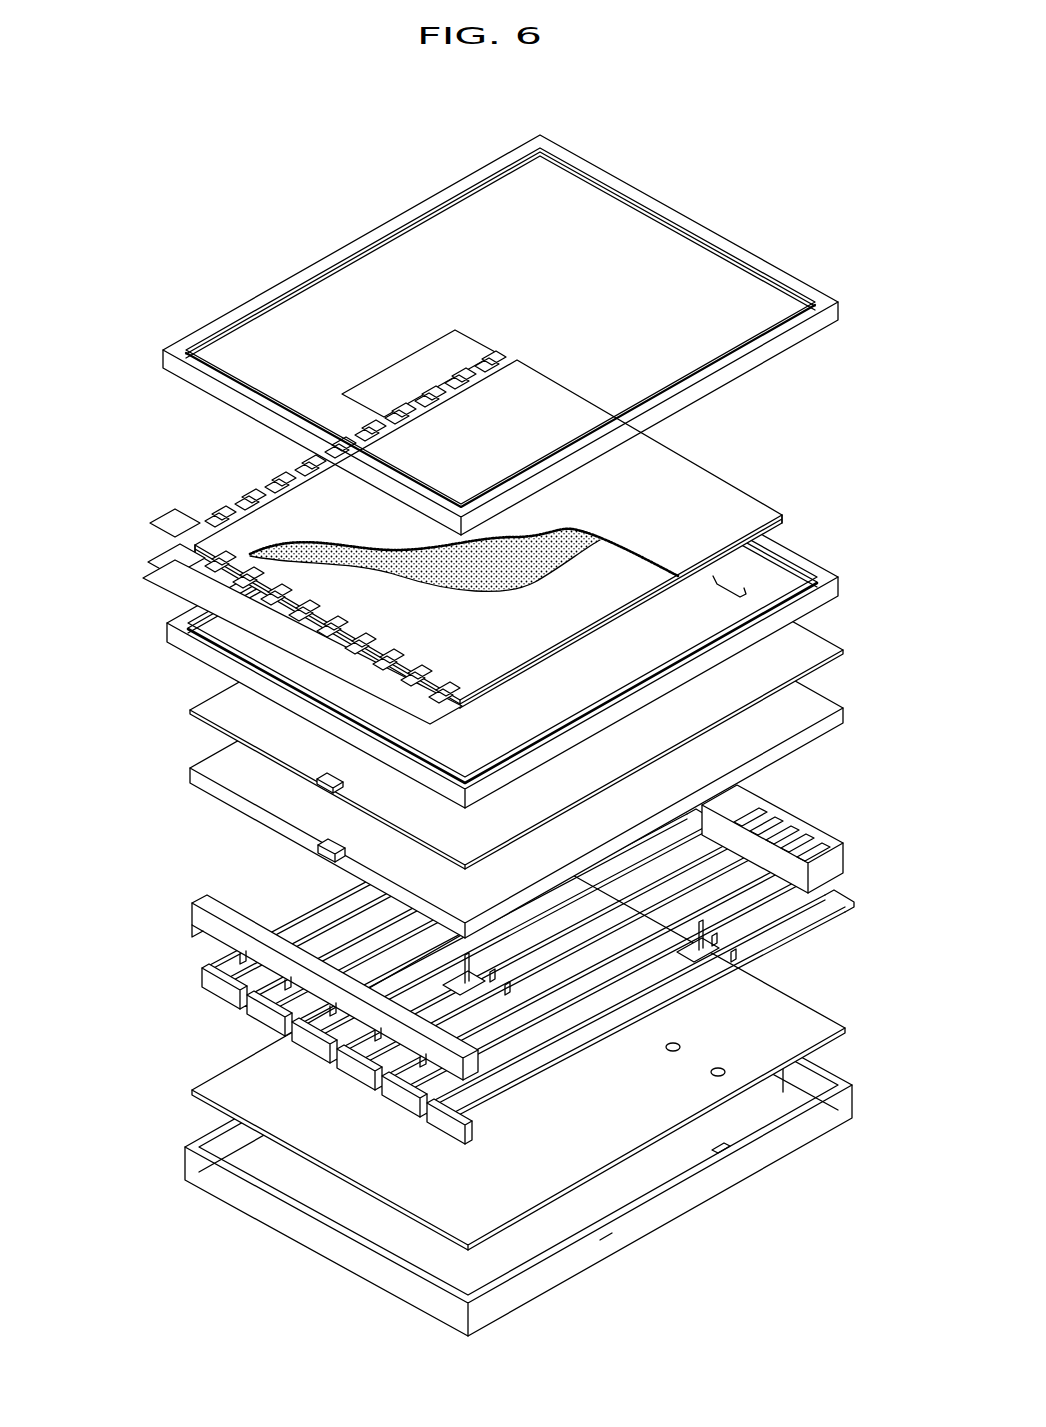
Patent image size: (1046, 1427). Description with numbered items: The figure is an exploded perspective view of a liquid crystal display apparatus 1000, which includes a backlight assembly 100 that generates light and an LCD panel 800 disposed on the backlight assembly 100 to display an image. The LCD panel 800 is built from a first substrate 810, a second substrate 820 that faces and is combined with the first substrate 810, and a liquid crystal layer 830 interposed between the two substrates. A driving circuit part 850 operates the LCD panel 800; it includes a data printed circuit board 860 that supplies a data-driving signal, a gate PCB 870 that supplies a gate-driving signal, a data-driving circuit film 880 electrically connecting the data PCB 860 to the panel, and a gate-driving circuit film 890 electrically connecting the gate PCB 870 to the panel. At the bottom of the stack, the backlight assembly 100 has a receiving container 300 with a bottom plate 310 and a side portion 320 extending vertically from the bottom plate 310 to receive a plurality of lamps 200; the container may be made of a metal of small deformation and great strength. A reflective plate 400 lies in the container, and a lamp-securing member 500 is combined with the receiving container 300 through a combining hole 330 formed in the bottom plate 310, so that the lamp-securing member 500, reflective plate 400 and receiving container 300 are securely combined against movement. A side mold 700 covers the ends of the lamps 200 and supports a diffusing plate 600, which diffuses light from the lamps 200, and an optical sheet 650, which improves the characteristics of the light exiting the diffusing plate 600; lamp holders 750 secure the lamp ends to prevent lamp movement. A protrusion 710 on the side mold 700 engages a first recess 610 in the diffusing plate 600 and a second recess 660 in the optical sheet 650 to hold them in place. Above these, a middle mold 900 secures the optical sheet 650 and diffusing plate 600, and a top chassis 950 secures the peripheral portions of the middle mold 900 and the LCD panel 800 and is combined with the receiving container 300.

The liquid crystal display apparatus 1000 is at (343, 178).
The top chassis 950 is at (745, 228).
The LCD panel 800 is at (504, 534).
The first substrate 810 is at (610, 567).
The second substrate 820 is at (747, 516).
The liquid crystal layer 830 is at (585, 530).
The driving circuit part 850 is at (98, 502).
The data-driving circuit film 880 is at (190, 516).
The data printed circuit board 860 is at (200, 529).
The gate-driving circuit film 890 is at (200, 568).
The gate PCB 870 is at (200, 580).
The middle mold 900 is at (790, 542).
The backlight assembly 100 is at (124, 1198).
The optical sheet 650 is at (485, 682).
The diffusing plate 600 is at (484, 745).
The second recess 660 is at (330, 787).
The first recess 610 is at (320, 850).
The side mold 700 is at (530, 944).
The protrusion 710 is at (338, 968).
The lamp holders 750 is at (263, 1012).
The lamps 200 is at (780, 932).
The lamp-securing member 500 is at (737, 975).
The reflective plate 400 is at (190, 1060).
The receiving container 300 is at (488, 1132).
The bottom plate 310 is at (678, 1173).
The side portion 320 is at (632, 1221).
The combining hole 330 is at (732, 1148).